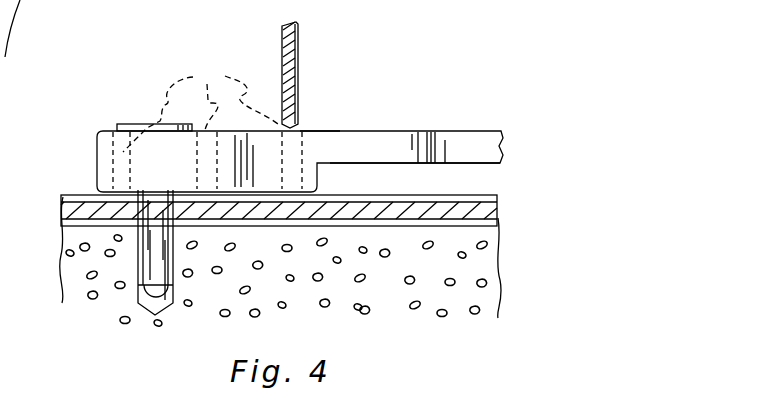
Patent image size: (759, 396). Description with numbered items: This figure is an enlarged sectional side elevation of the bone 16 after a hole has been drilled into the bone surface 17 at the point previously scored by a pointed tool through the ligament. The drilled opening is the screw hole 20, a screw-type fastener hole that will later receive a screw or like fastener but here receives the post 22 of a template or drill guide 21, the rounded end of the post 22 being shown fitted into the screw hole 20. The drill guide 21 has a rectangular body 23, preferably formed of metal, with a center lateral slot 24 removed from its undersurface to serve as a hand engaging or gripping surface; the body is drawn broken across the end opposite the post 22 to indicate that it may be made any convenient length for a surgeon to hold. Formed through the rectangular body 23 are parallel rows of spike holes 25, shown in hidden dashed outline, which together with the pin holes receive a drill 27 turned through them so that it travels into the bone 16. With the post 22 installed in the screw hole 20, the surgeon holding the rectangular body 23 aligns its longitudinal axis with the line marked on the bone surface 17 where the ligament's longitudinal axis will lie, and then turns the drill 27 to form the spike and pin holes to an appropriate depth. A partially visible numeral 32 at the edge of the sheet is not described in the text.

The bone 16 is at (467, 268).
The bone surface 17 is at (470, 195).
The screw hole 20 is at (134, 276).
The drill guide 21 is at (358, 113).
The post 22 is at (152, 238).
The rectangular body 23 is at (316, 130).
The center lateral slot 24 is at (388, 172).
The spike holes 25 is at (200, 106).
The drill 27 is at (300, 42).
The adjacent component 32 is at (8, 354).